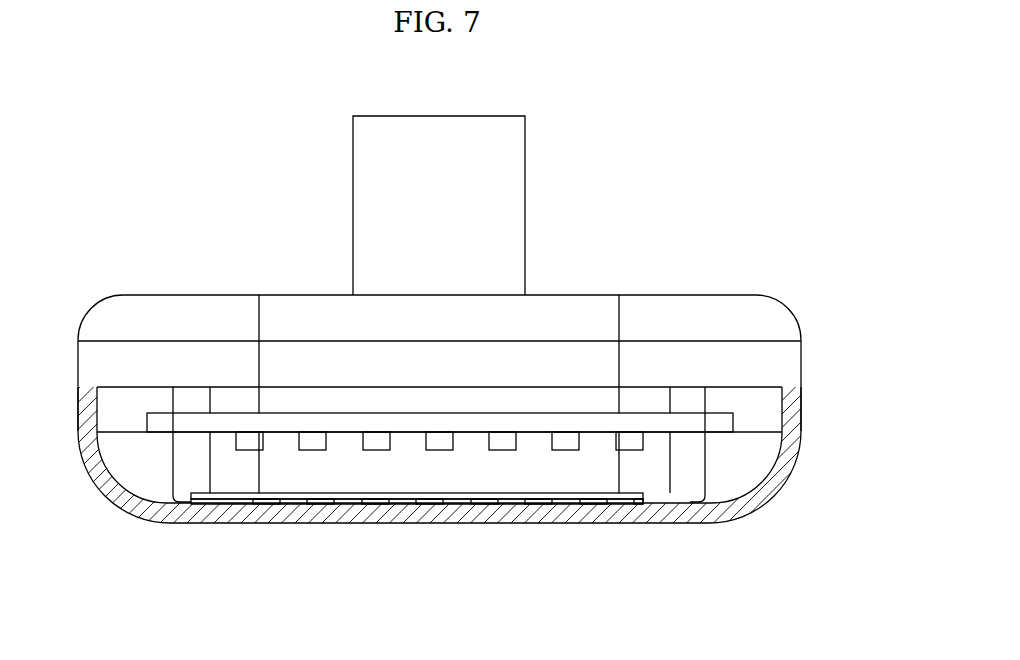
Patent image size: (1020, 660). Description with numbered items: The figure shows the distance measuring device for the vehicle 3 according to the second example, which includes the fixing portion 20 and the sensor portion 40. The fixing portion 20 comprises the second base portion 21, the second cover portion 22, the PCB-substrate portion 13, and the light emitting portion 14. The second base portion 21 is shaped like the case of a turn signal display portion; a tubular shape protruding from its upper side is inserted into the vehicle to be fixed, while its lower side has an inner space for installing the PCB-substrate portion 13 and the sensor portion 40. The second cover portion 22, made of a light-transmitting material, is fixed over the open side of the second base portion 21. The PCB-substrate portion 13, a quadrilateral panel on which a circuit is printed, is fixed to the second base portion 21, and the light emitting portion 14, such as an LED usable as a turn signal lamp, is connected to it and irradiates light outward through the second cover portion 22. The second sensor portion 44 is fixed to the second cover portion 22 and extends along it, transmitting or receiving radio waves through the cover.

The distance measuring device for the vehicle 3 is at (725, 152).
The fixing portion 20 is at (482, 362).
The second base portion 21 is at (176, 355).
The second cover portion 22 is at (121, 494).
The PCB-substrate portion 13 is at (573, 423).
The light emitting portion 14 is at (627, 440).
The sensor portion 40 is at (275, 493).
The second sensor portion 44 is at (563, 505).